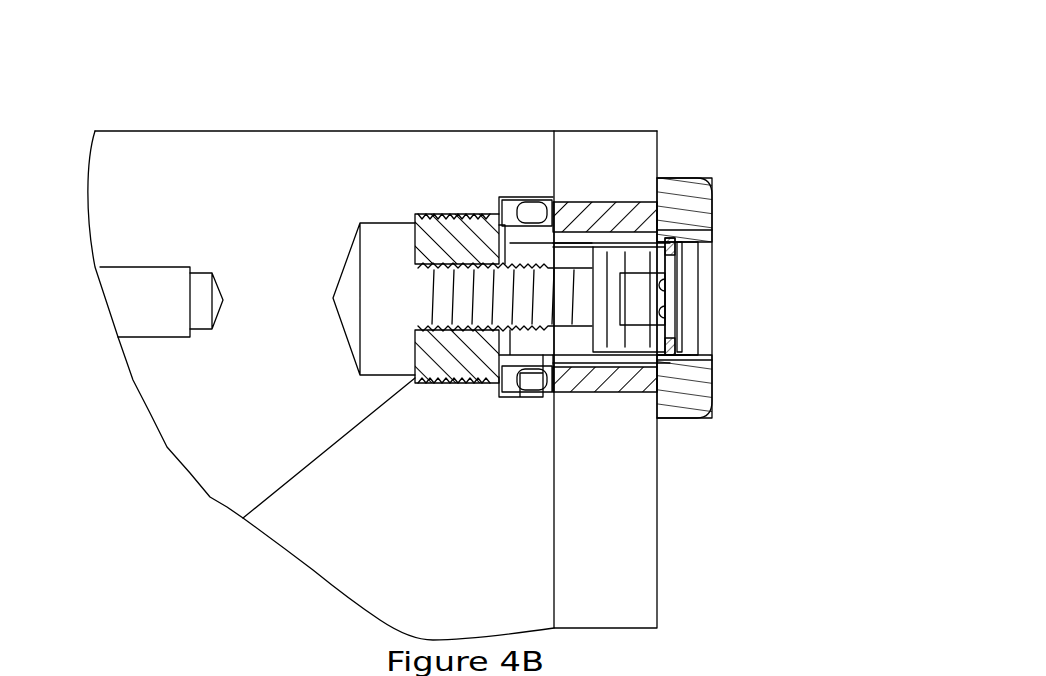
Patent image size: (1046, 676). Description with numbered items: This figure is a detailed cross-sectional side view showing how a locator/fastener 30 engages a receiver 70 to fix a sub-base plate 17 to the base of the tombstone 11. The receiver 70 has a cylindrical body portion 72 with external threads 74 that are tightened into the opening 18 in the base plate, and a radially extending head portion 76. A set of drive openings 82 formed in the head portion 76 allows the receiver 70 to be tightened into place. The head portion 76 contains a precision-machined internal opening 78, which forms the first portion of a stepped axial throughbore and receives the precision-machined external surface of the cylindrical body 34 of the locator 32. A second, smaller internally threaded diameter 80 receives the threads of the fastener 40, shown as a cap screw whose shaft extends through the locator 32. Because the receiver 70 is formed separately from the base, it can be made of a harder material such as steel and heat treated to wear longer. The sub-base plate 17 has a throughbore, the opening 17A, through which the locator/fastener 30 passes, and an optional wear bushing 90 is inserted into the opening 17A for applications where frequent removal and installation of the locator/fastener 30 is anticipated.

The tombstone 11 is at (196, 226).
The sub-base plate 17 is at (586, 576).
The opening in sub-base plate 17A is at (632, 213).
The opening in base plate 18 is at (438, 214).
The locator/fastener 30 is at (686, 158).
The locator 32 is at (495, 213).
The cylindrical body 34 is at (587, 393).
The fastener 40 is at (408, 297).
The receiver 70 is at (506, 185).
The cylindrical body portion 72 is at (412, 214).
The external threads 74 is at (450, 383).
The head portion 76 is at (507, 398).
The internal opening 78 is at (620, 213).
The internally threaded diameter 80 is at (417, 330).
The drive openings 82 is at (560, 200).
The wear bushing 90 is at (640, 216).